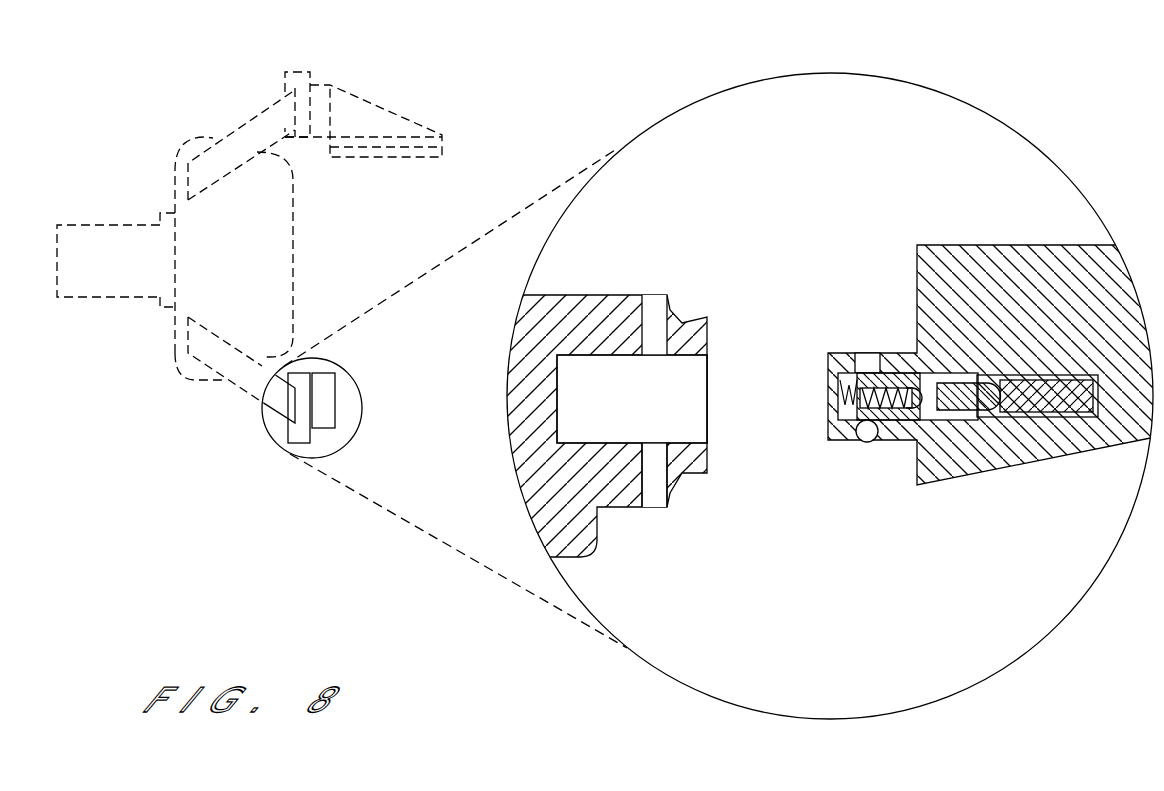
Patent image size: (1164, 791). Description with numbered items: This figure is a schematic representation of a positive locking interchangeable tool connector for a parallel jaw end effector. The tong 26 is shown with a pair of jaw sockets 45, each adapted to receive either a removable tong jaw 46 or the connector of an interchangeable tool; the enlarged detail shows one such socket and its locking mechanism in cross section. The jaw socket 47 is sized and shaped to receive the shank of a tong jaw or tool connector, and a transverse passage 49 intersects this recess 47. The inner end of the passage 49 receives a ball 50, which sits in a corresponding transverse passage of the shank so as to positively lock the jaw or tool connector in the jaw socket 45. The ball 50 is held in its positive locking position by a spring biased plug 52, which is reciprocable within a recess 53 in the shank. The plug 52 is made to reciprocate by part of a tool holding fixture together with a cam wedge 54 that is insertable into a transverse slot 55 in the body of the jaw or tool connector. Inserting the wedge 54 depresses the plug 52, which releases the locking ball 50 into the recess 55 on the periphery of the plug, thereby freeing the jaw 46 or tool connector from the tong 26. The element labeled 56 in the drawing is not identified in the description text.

The tong 26 is at (173, 167).
The jaw socket 45 is at (300, 70).
The removable tong jaw 46 is at (393, 110).
The jaw socket recess 47 is at (677, 407).
The transverse passage 49 is at (655, 505).
The ball 50 is at (865, 443).
The spring biased plug 52 is at (960, 411).
The recess 53 is at (842, 400).
The cam wedge 54 is at (1077, 417).
The transverse slot 55 is at (990, 419).
The plunger 56 is at (905, 421).